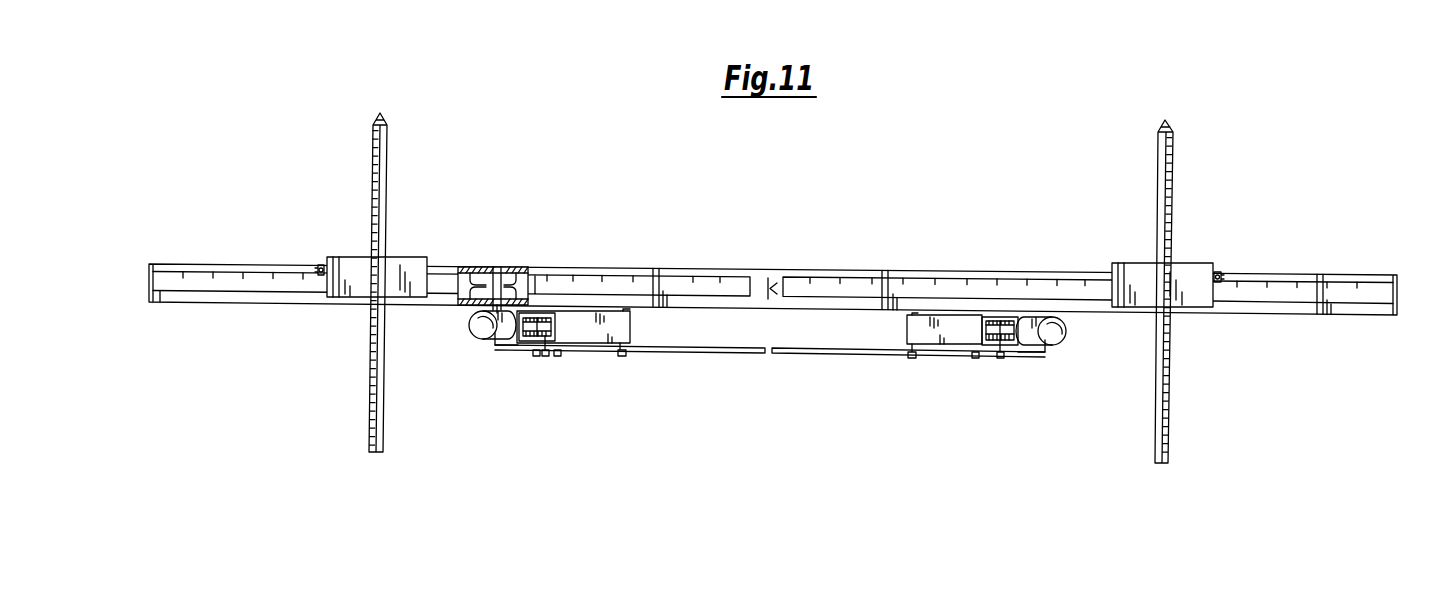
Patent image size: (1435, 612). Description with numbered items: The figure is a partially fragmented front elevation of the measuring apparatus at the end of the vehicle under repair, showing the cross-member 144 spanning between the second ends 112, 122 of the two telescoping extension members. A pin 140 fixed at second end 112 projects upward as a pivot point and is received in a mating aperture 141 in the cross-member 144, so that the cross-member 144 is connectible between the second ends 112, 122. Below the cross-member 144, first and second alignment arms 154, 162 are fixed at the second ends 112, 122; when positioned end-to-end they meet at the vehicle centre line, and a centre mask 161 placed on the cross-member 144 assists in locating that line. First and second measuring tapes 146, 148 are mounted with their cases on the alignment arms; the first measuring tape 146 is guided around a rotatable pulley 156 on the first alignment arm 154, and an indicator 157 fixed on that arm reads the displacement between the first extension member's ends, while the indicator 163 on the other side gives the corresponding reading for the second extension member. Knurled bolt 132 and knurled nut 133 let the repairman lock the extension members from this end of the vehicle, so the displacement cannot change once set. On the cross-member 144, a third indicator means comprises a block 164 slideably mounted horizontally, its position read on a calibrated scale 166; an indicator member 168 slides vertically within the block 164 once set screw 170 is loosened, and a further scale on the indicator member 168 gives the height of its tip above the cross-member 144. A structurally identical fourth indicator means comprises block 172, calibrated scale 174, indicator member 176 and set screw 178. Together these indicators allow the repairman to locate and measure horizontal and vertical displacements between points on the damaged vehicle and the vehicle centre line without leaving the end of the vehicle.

The second end of first extension member 112 is at (494, 346).
The second end of second extension member 122 is at (1041, 352).
The knurled bolt 132 is at (470, 327).
The knurled nut 133 is at (1066, 329).
The pin 140 is at (487, 268).
The mating aperture 141 is at (503, 267).
The cross-member 144 is at (732, 272).
The first measuring tape 146 is at (556, 332).
The second measuring tape 148 is at (978, 331).
The first alignment arm 154 is at (695, 350).
The rotatable pulley 156 is at (530, 341).
The indicator 157 is at (545, 345).
The centre mask 161 is at (774, 281).
The second alignment arm 162 is at (862, 354).
The indicator 163 is at (997, 347).
The block 164 is at (350, 257).
The calibrated scale 166 is at (672, 272).
The indicator member 168 is at (388, 166).
The set screw 170 is at (318, 267).
The block 172 is at (1195, 272).
The calibrated scale 174 is at (985, 276).
The indicator member 176 is at (1158, 165).
The set screw 178 is at (1223, 275).